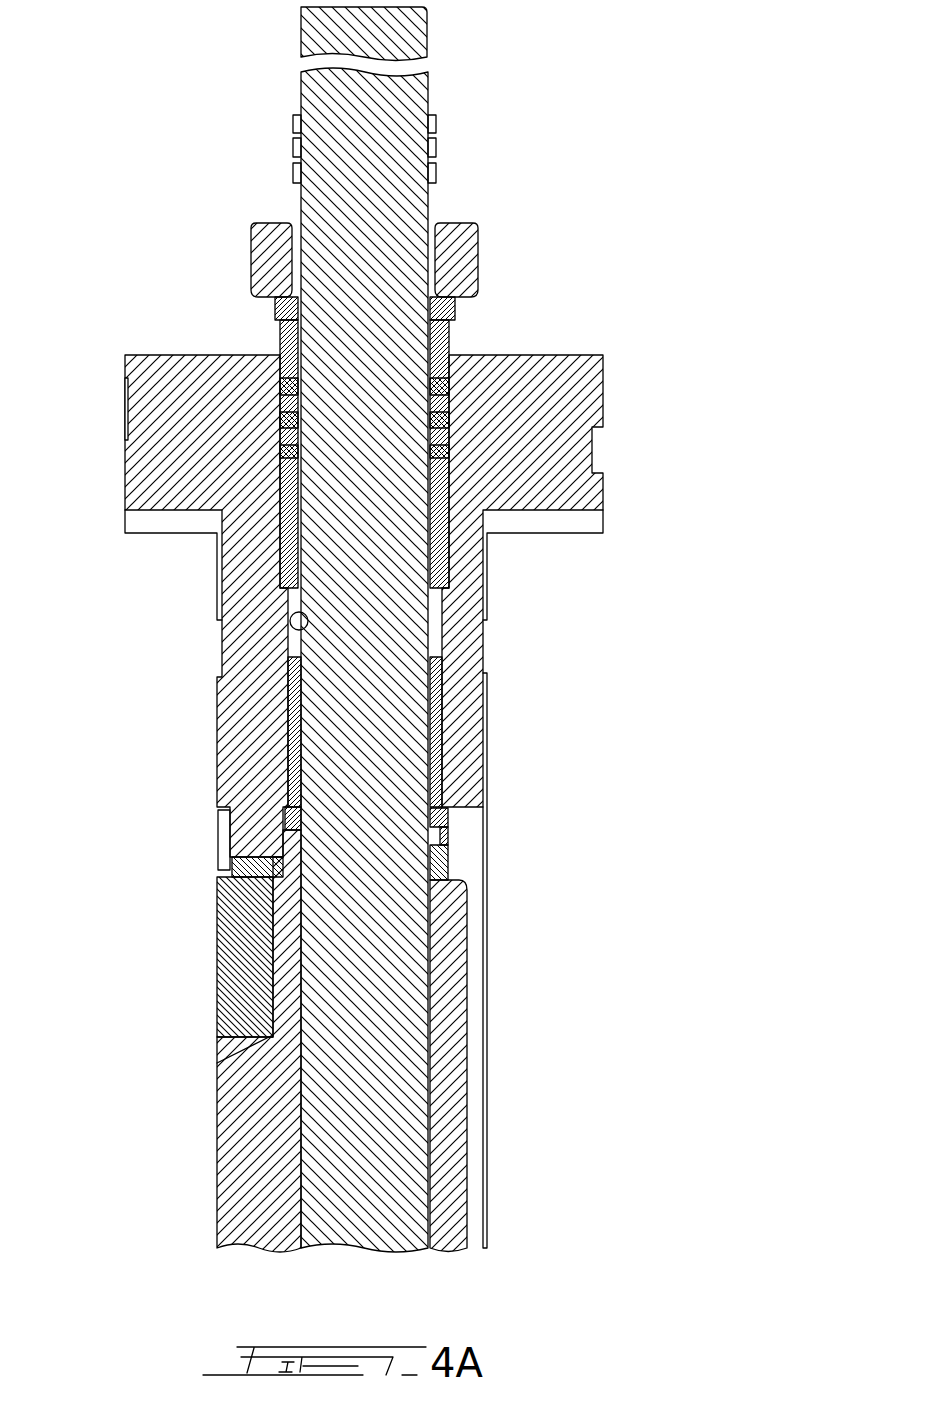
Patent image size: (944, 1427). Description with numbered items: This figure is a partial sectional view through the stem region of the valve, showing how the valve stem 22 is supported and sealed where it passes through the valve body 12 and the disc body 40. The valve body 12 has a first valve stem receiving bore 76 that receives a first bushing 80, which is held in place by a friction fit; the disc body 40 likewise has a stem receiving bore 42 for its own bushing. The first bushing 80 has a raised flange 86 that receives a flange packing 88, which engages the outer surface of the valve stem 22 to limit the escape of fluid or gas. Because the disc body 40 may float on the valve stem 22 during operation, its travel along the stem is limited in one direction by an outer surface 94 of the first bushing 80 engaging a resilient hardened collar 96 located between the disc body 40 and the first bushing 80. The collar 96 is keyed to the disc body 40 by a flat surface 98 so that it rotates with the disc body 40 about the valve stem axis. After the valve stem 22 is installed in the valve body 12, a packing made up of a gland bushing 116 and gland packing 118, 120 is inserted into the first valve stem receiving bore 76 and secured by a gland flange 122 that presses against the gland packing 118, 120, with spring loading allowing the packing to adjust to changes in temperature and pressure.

The valve body 12 is at (567, 390).
The valve stem 22 is at (385, 990).
The disc body 40 is at (263, 1162).
The stem receiving bore 42 is at (431, 1134).
The first valve stem receiving bore 76 is at (299, 630).
The first bushing 80 is at (287, 750).
The raised flange 86 is at (448, 818).
The flange packing 88 is at (290, 823).
The outer surface 94 is at (278, 873).
The resilient hardened collar 96 is at (448, 868).
The flat surface 98 is at (268, 905).
The gland bushing 116 is at (447, 320).
The gland packing 118 is at (292, 430).
The gland packing 120 is at (292, 553).
The gland flange 122 is at (266, 258).